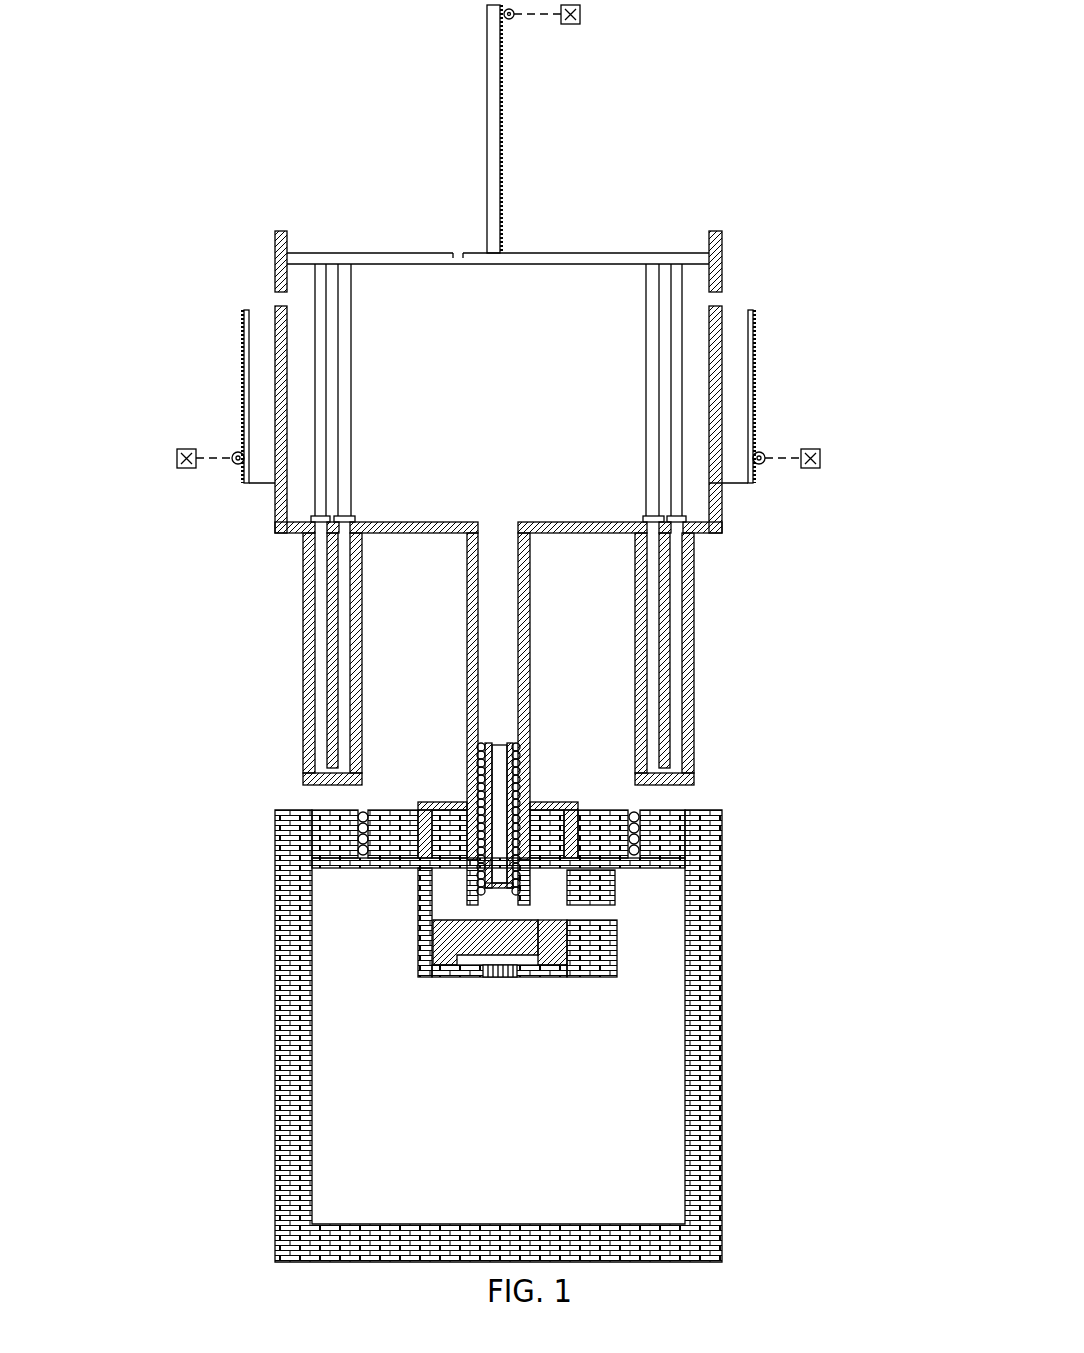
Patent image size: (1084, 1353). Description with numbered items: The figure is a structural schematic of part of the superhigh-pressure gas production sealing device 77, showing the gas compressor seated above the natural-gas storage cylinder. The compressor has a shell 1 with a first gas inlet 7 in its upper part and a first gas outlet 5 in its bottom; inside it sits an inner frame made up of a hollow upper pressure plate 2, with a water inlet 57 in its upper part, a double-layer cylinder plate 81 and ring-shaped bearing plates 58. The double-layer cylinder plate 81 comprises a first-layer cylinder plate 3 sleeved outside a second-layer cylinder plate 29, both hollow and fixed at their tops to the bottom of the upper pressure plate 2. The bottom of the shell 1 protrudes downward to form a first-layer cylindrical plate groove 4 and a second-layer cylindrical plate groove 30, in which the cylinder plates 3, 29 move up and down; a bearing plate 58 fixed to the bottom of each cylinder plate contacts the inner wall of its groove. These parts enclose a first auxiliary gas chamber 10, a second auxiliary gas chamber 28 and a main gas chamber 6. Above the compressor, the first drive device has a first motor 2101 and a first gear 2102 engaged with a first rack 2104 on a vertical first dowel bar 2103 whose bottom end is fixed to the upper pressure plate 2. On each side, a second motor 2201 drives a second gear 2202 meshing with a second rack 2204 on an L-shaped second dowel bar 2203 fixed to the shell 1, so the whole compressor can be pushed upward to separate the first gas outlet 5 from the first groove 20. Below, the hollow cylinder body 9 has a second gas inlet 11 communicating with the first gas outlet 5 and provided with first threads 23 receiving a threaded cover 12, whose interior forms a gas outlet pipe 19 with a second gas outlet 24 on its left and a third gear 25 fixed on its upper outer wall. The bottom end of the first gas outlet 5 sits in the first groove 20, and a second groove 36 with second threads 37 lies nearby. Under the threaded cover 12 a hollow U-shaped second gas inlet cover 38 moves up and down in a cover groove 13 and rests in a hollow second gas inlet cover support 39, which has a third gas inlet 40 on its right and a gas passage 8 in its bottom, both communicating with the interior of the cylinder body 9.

The shell 1 is at (276, 306).
The upper pressure plate 2 is at (550, 253).
The first-layer cylinder plate 3 is at (315, 472).
The first-layer cylindrical plate groove 4 is at (320, 643).
The first gas outlet 5 is at (360, 678).
The main gas chamber 6 is at (465, 478).
The first gas inlet 7 is at (276, 297).
The gas passage 8 is at (545, 978).
The cylinder body 9 is at (723, 810).
The first auxiliary gas chamber 10 is at (298, 503).
The second gas inlet 11 is at (497, 902).
The threaded cover 12 is at (483, 740).
The cover groove 13 is at (447, 888).
The gas outlet pipe 19 is at (493, 848).
The first groove 20 is at (418, 802).
The first threads 23 is at (537, 933).
The second gas outlet 24 is at (552, 877).
The third gear 25 is at (483, 748).
The second auxiliary gas chamber 28 is at (300, 535).
The second-layer cylinder plate 29 is at (352, 437).
The second-layer cylindrical plate groove 30 is at (343, 717).
The second groove 36 is at (357, 823).
The second threads 37 is at (357, 855).
The second gas inlet cover 38 is at (483, 978).
The second gas inlet cover support 39 is at (580, 977).
The third gas inlet 40 is at (617, 913).
The water inlet 57 is at (458, 253).
The bearing plate 58 is at (320, 538).
The superhigh-pressure gas production sealing device 77 is at (732, 188).
The double-layer cylinder plate 81 is at (305, 407).
The first motor 2101 is at (660, 48).
The first gear 2102 is at (512, 18).
The first dowel bar 2103 is at (486, 80).
The first rack 2104 is at (580, 154).
The second motor 2201 is at (187, 470).
The second gear 2202 is at (240, 455).
The second dowel bar 2203 is at (250, 487).
The second rack 2204 is at (248, 367).